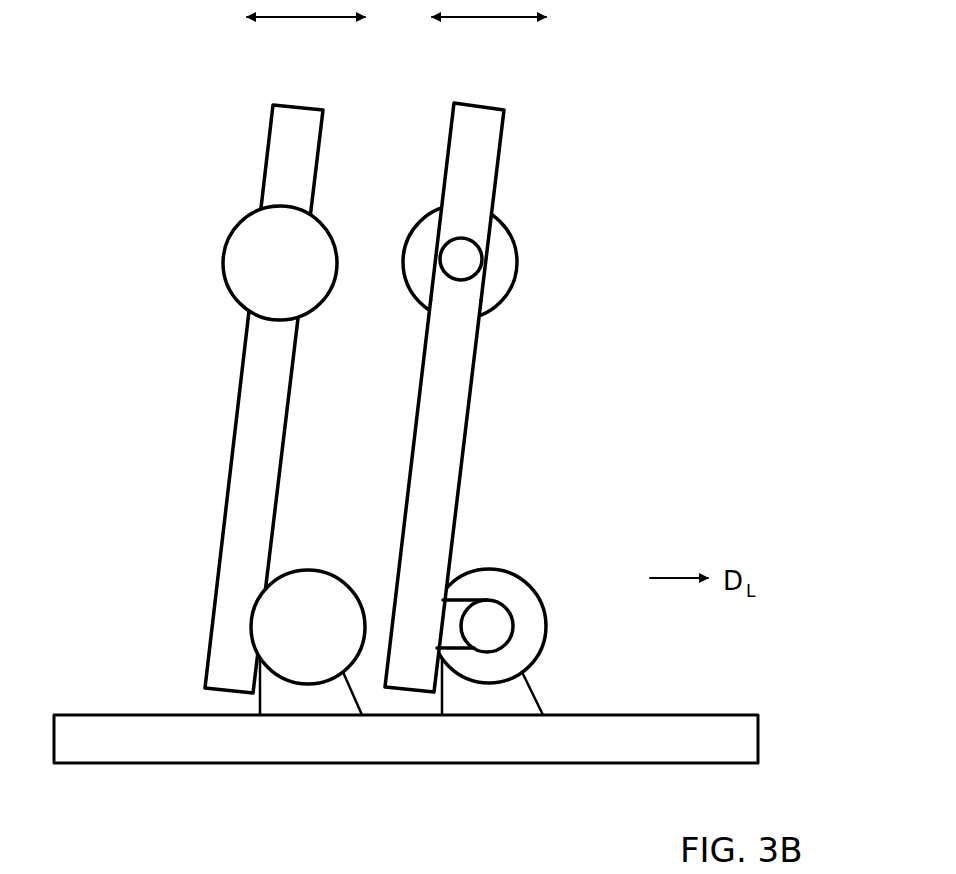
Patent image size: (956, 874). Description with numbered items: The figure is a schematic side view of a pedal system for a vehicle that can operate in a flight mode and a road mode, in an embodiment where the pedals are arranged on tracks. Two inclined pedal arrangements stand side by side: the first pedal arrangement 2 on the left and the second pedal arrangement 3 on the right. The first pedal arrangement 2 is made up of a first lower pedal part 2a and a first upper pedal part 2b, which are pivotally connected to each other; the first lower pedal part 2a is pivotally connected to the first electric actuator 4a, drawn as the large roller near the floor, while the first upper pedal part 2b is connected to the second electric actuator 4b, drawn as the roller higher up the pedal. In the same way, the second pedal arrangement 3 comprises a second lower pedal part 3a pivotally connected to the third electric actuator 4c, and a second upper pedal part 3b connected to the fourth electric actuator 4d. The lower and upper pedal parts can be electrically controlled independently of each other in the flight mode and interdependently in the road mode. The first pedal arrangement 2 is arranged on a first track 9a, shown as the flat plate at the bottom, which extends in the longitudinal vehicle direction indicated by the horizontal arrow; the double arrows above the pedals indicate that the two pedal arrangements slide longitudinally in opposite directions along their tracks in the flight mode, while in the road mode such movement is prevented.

The first pedal arrangement 2 is at (233, 360).
The first lower pedal part 2a is at (238, 530).
The first upper pedal part 2b is at (285, 123).
The second pedal arrangement 3 is at (496, 361).
The second lower pedal part 3a is at (472, 397).
The second upper pedal part 3b is at (452, 117).
The first electric actuator 4a is at (270, 623).
The second electric actuator 4b is at (248, 265).
The third electric actuator 4c is at (500, 592).
The fourth electric actuator 4d is at (498, 262).
The first track 9a is at (750, 738).